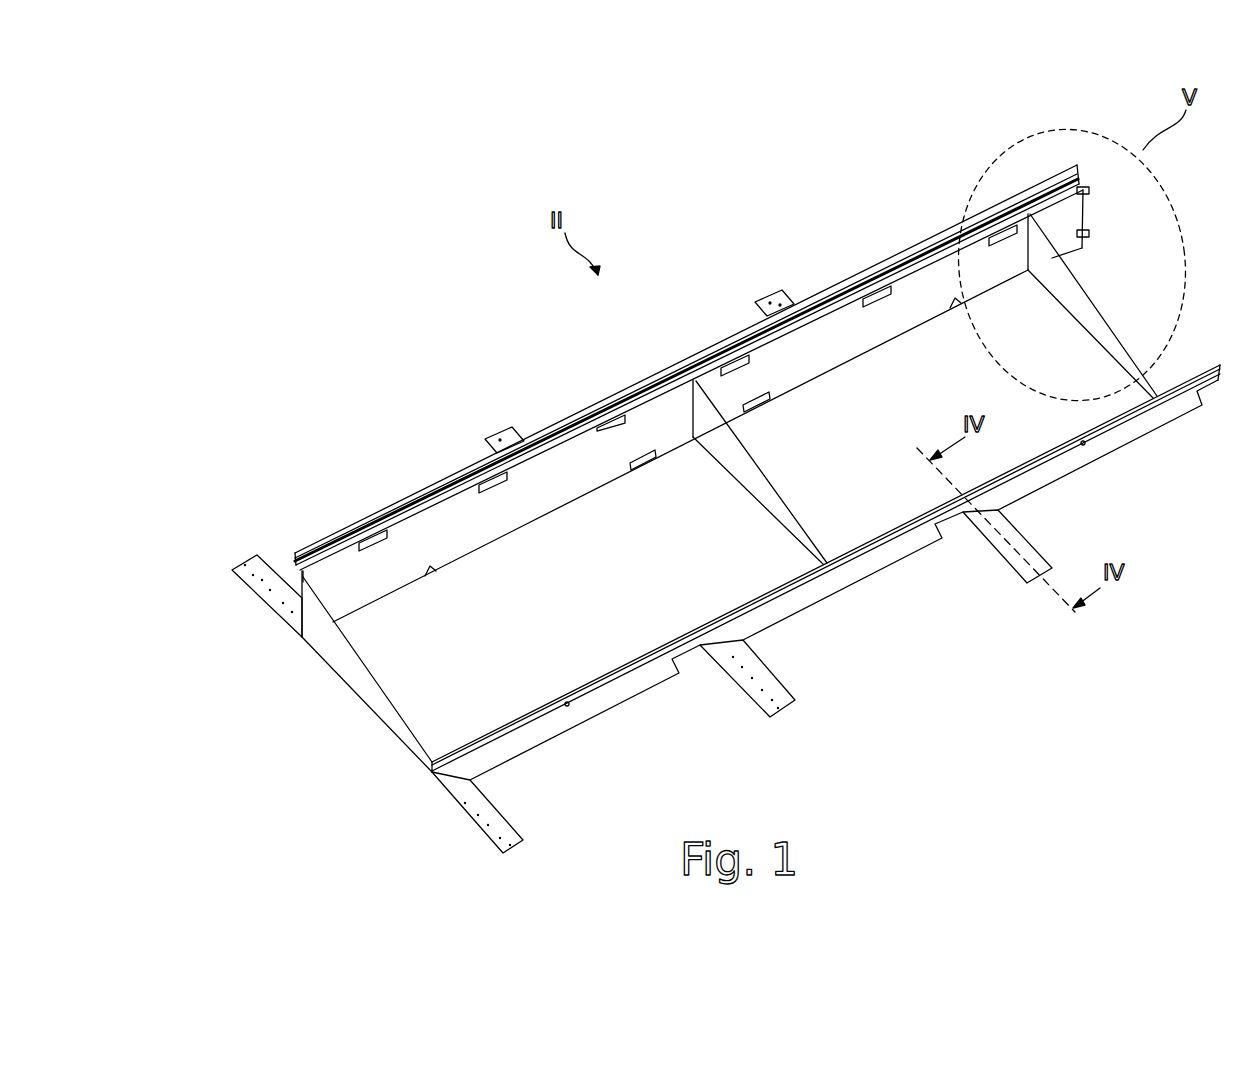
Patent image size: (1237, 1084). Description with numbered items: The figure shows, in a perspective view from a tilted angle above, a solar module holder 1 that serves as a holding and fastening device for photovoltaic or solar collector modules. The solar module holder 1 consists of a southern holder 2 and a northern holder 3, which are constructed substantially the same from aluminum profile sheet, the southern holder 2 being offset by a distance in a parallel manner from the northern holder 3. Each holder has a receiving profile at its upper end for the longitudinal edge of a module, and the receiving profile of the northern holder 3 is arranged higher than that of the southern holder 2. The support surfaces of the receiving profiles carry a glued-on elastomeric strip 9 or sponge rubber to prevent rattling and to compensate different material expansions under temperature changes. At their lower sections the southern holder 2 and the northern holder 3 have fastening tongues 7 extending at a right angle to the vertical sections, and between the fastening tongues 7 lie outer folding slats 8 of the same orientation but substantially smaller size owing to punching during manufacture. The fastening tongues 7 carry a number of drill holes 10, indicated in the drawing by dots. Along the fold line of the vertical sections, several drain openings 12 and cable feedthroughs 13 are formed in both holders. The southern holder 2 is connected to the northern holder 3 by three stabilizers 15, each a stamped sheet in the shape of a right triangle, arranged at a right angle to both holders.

The solar module holder 1 is at (706, 513).
The southern holder 2 is at (622, 663).
The northern holder 3 is at (912, 288).
The fastening tongues 7 is at (506, 433).
The outer folding slats 8 is at (623, 690).
The elastomeric strip 9 is at (661, 380).
The drill holes 10 is at (283, 597).
The drain openings 12 is at (641, 472).
The cable feedthroughs 13 is at (436, 572).
The stabilizers 15 is at (368, 688).